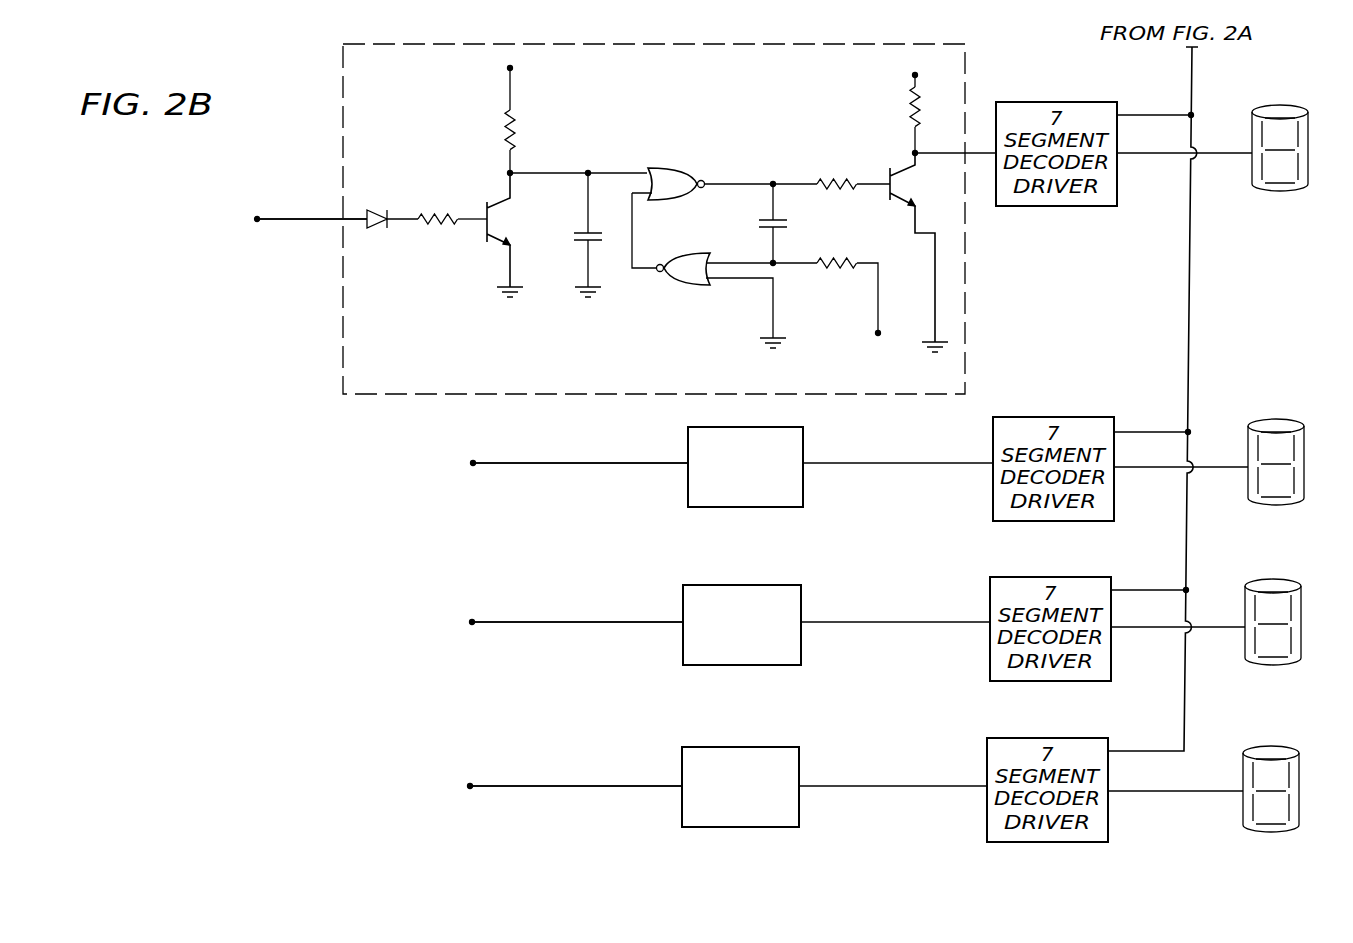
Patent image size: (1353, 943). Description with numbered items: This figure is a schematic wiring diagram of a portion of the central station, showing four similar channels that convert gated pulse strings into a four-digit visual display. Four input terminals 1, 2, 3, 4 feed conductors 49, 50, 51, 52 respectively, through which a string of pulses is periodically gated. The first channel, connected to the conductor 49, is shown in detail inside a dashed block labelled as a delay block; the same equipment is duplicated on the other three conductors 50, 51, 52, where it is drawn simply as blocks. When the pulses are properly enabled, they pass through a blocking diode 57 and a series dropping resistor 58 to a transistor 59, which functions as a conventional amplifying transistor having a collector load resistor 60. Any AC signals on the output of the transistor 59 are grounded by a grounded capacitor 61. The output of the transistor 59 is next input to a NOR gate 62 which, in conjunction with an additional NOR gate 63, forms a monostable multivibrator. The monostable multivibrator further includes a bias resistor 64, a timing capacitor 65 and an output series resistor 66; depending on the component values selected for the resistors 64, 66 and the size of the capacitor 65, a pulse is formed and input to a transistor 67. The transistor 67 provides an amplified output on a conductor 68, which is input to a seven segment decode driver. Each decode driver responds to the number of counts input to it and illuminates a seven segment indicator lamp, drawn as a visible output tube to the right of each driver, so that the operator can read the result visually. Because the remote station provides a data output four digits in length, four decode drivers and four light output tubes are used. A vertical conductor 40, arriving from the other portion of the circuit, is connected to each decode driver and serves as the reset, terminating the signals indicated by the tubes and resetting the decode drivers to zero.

The input terminal 1 is at (301, 219).
The input terminal 2 is at (564, 463).
The input terminal 3 is at (562, 622).
The input terminal 4 is at (561, 786).
The conductor 40 is at (1193, 89).
The conductor 49 is at (287, 216).
The conductor 50 is at (572, 462).
The conductor 51 is at (566, 621).
The conductor 52 is at (546, 784).
The blocking diode 57 is at (375, 209).
The series dropping resistor 58 is at (437, 213).
The transistor 59 is at (501, 212).
The collector load resistor 60 is at (519, 128).
The grounded capacitor 61 is at (575, 234).
The NOR gate 62 is at (671, 168).
The NOR gate 63 is at (688, 253).
The bias resistor 64 is at (858, 261).
The timing capacitor 65 is at (784, 224).
The output series resistor 66 is at (823, 176).
The transistor 67 is at (907, 172).
The conductor 68 is at (940, 152).